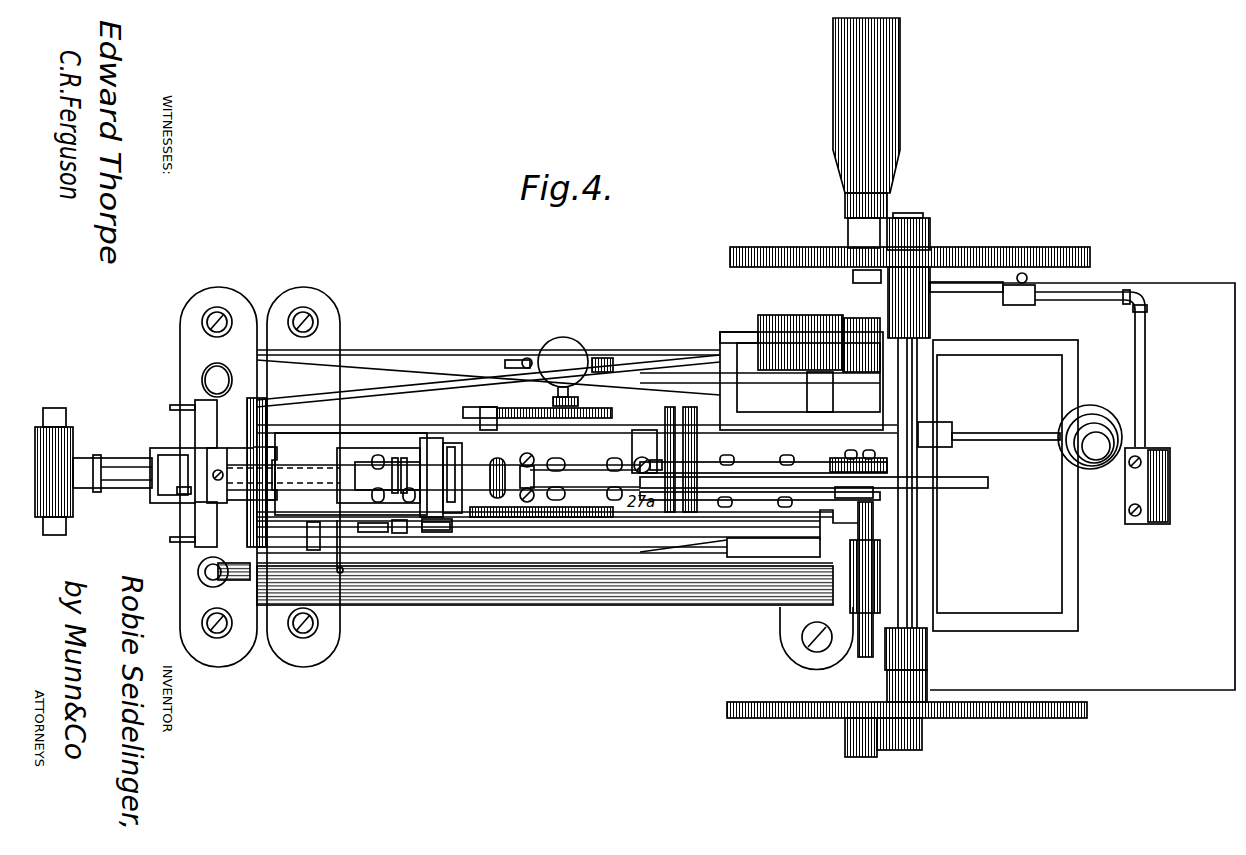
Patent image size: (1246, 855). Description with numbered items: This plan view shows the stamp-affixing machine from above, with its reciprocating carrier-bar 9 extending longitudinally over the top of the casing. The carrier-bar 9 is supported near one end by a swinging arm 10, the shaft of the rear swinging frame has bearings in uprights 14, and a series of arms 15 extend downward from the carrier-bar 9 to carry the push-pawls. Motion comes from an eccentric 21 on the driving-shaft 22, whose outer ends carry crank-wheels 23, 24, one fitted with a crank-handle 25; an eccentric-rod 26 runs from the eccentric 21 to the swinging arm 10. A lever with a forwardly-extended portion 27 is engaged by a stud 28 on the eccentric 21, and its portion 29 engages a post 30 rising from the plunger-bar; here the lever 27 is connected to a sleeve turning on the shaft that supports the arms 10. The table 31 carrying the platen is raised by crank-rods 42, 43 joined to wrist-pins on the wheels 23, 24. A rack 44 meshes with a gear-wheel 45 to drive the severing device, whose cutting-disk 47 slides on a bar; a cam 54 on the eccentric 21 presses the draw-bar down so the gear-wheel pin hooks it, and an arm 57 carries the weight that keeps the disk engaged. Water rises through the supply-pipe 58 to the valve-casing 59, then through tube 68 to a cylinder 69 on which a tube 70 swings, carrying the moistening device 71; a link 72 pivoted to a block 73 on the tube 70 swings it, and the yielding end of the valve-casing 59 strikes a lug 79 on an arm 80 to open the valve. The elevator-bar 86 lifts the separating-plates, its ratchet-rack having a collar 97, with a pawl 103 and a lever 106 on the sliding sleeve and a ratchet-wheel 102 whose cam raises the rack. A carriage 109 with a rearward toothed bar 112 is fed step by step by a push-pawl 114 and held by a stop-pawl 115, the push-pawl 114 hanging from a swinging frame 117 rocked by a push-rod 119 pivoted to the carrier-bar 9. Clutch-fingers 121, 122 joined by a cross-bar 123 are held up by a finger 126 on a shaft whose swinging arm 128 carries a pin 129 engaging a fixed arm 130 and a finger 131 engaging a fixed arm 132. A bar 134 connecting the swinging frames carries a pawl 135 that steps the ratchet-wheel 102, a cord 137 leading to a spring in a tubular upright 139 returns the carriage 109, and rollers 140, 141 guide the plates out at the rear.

The carrier-bar 9 is at (483, 478).
The swinging arm 10 is at (645, 430).
The uprights 14 is at (242, 447).
The arms 15 is at (570, 454).
The eccentric 21 is at (948, 478).
The driving-shaft 22 is at (918, 603).
The crank-wheel 23 is at (1022, 722).
The crank-wheel 24 is at (1068, 254).
The crank-handle 25 is at (900, 143).
The eccentric-rod 26 is at (752, 470).
The forwardly-extended portion of lever 27 is at (770, 485).
The stud 28 is at (836, 494).
The lever portion 29 is at (585, 477).
The post 30 is at (545, 452).
The table 31 is at (1082, 486).
The crank-rod 42 is at (920, 733).
The crank-rod 43 is at (930, 237).
The rack 44 is at (860, 660).
The gear-wheel 45 is at (880, 508).
The cutting-disk 47 is at (940, 421).
The cam 54 is at (832, 458).
The arm 57 is at (1025, 422).
The supply-pipe 58 is at (1100, 413).
The valve-casing 59 is at (773, 316).
The tube 68 is at (843, 318).
The cylinder 69 is at (856, 284).
The tube 70 is at (1070, 300).
The moistening device 71 is at (1160, 505).
The link 72 is at (990, 293).
The block 73 is at (1020, 305).
The lug 79 is at (747, 332).
The arm 80 is at (722, 347).
The elevator-bar 86 is at (455, 368).
The collar 97 is at (553, 401).
The ratchet-wheel 102 is at (613, 398).
The pawl 103 is at (513, 358).
The lever 106 is at (610, 360).
The carriage 109 is at (348, 433).
The bar 112 is at (130, 457).
The push-pawl 114 is at (255, 470).
The stop-pawl 115 is at (330, 468).
The swinging frame 117 is at (196, 448).
The push-rod 119 is at (180, 497).
The clutch-finger 121 is at (432, 440).
The clutch-finger 122 is at (452, 525).
The cross-bar 123 is at (460, 450).
The finger 126 is at (408, 502).
The swinging arm 128 is at (430, 530).
The pin 129 is at (442, 533).
The fixed arm 130 is at (690, 545).
The finger 131 is at (372, 532).
The fixed arm 132 is at (310, 545).
The bar 134 is at (372, 425).
The pawl 135 is at (508, 407).
The cord 137 is at (272, 605).
The tubular upright 139 is at (198, 571).
The roller 140 is at (150, 500).
The roller 141 is at (73, 508).